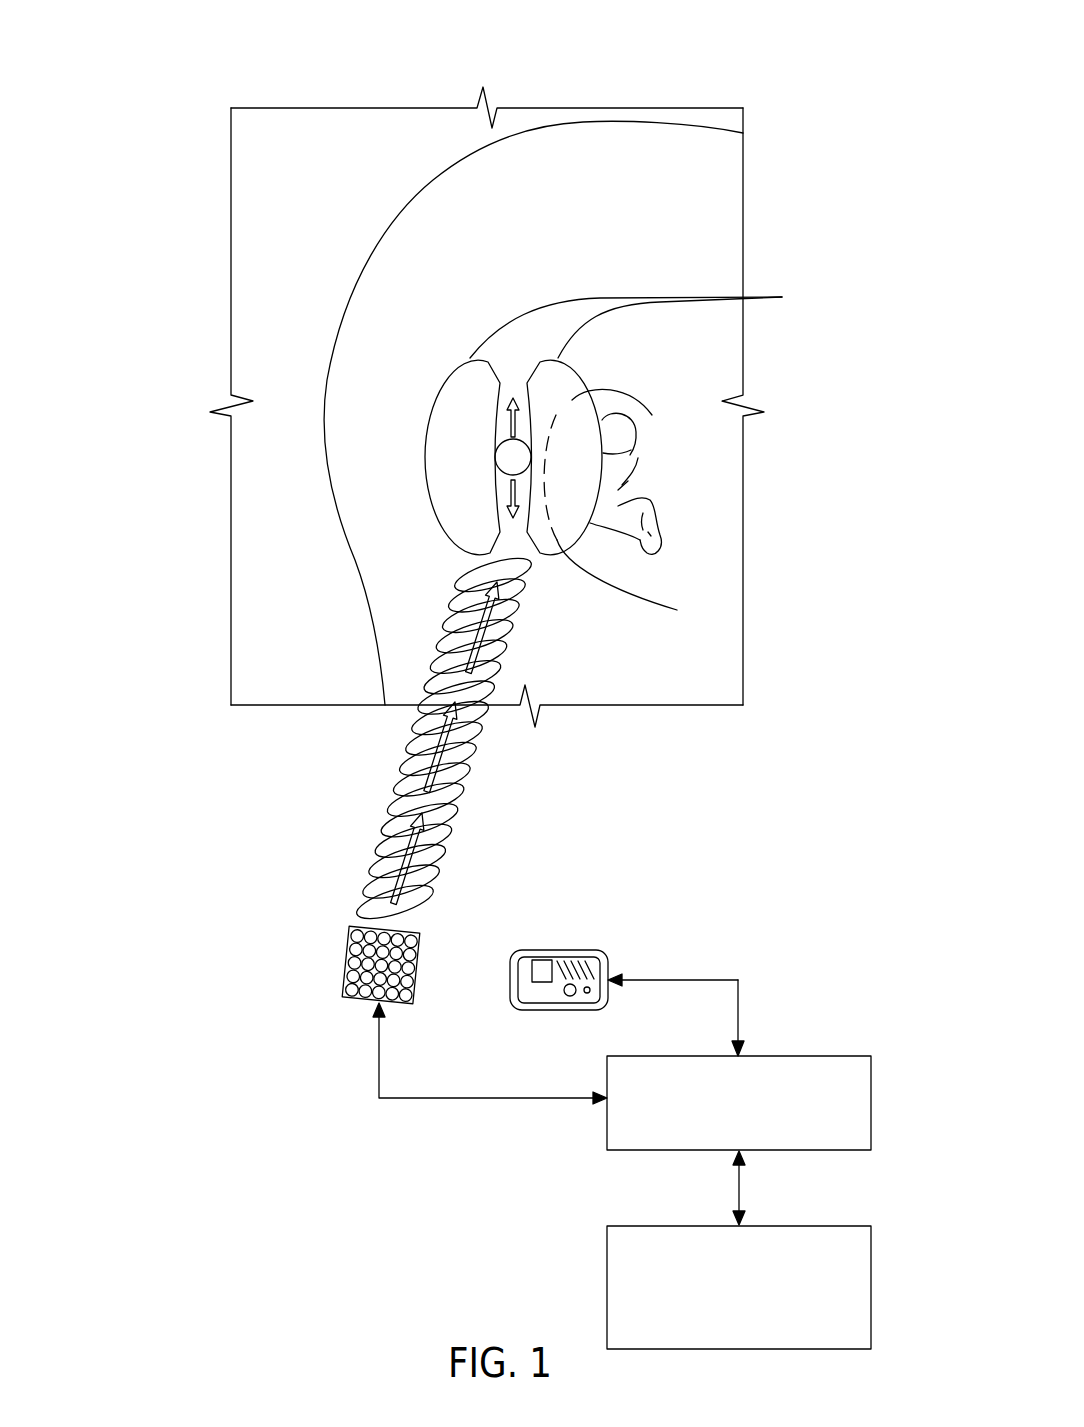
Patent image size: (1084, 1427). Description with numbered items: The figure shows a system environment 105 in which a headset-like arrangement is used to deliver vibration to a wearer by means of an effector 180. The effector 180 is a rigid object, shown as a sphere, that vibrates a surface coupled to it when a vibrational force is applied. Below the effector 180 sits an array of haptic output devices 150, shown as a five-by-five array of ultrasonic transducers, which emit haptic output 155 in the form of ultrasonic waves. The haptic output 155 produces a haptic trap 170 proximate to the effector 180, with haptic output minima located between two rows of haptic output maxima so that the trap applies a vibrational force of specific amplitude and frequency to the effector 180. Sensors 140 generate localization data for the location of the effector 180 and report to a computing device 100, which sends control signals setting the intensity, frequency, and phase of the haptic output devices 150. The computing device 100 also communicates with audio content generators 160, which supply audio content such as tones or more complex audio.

The system environment 105 is at (749, 46).
The haptic trap 170 is at (887, 342).
The effector 180 is at (495, 458).
The haptic output 155 is at (385, 815).
The haptic output devices 150 is at (347, 956).
The sensors 140 is at (562, 950).
The computing device 100 is at (755, 1132).
The audio content generators 160 is at (755, 1329).